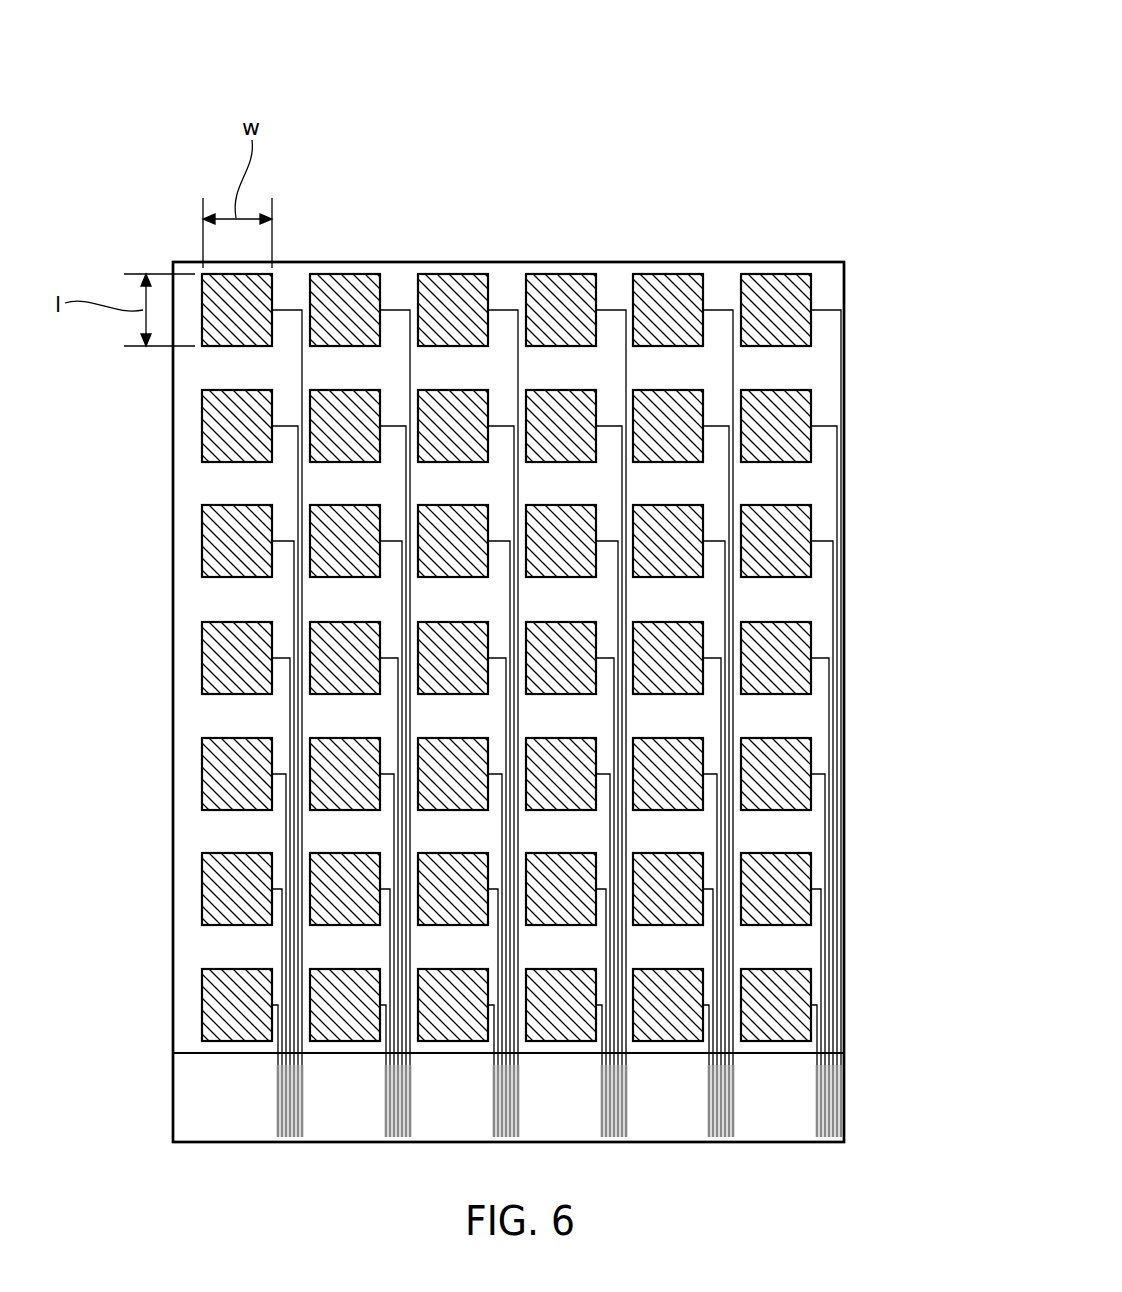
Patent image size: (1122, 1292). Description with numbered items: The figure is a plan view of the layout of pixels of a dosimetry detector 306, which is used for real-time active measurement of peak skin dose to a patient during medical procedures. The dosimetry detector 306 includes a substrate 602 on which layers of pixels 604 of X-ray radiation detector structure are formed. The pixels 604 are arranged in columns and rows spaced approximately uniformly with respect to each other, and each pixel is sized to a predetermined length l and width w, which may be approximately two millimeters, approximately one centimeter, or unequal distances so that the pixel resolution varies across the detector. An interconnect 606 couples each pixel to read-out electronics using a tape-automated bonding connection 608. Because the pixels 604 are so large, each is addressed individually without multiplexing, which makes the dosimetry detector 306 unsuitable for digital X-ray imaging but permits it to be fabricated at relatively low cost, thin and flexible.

The dosimetry detector 306 is at (637, 105).
The substrate 602 is at (508, 278).
The pixels 604 is at (578, 285).
The interconnect 606 is at (625, 369).
The tape-automated bonding (TAB) connection 608 is at (798, 1092).